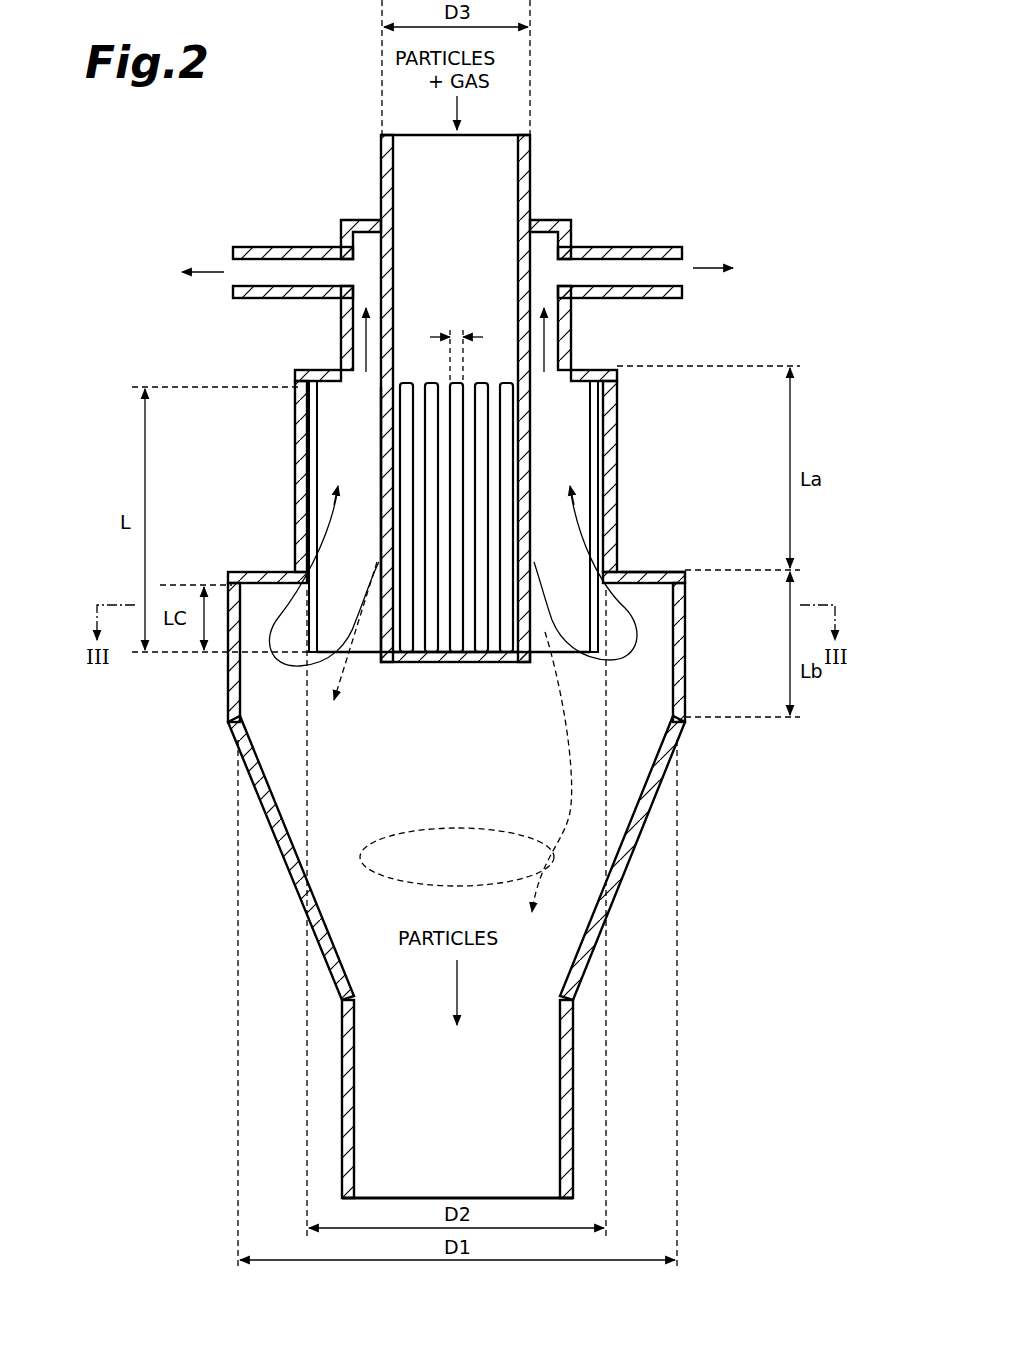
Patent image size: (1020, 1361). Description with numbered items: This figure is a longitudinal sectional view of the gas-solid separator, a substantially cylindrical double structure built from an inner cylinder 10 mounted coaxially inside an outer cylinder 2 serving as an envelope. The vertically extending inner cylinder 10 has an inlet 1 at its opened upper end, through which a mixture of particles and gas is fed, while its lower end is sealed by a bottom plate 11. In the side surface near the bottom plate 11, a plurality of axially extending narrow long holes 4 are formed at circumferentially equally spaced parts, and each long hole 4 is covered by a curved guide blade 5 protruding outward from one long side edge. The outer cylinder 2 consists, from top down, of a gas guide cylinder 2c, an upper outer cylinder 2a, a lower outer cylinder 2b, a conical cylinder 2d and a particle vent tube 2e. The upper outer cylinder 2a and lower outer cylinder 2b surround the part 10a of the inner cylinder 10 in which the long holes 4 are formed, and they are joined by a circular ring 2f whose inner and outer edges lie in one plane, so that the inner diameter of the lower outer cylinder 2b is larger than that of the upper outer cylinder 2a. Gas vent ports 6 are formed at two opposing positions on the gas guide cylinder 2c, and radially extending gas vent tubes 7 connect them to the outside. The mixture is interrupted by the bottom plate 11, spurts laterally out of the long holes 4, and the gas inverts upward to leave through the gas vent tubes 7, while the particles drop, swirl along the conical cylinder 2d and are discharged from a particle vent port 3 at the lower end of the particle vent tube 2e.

The inlet 1 is at (494, 152).
The outer cylinder 2 is at (750, 403).
The upper outer cylinder 2a is at (617, 495).
The lower outer cylinder 2b is at (688, 622).
The gas guide cylinder 2c is at (572, 316).
The conical cylinder 2d is at (682, 750).
The particle vent tube 2e is at (573, 1042).
The circular ring 2f is at (640, 569).
The particle vent port 3 is at (541, 1203).
The long holes 4 is at (565, 362).
The guide blade 5 is at (327, 456).
The gas vent port 6 is at (368, 246).
The gas vent tubes 7 is at (265, 249).
The inner cylinder 10 is at (520, 196).
The part in which the long holes are formed 10a is at (215, 387).
The bottom plate 11 is at (471, 667).